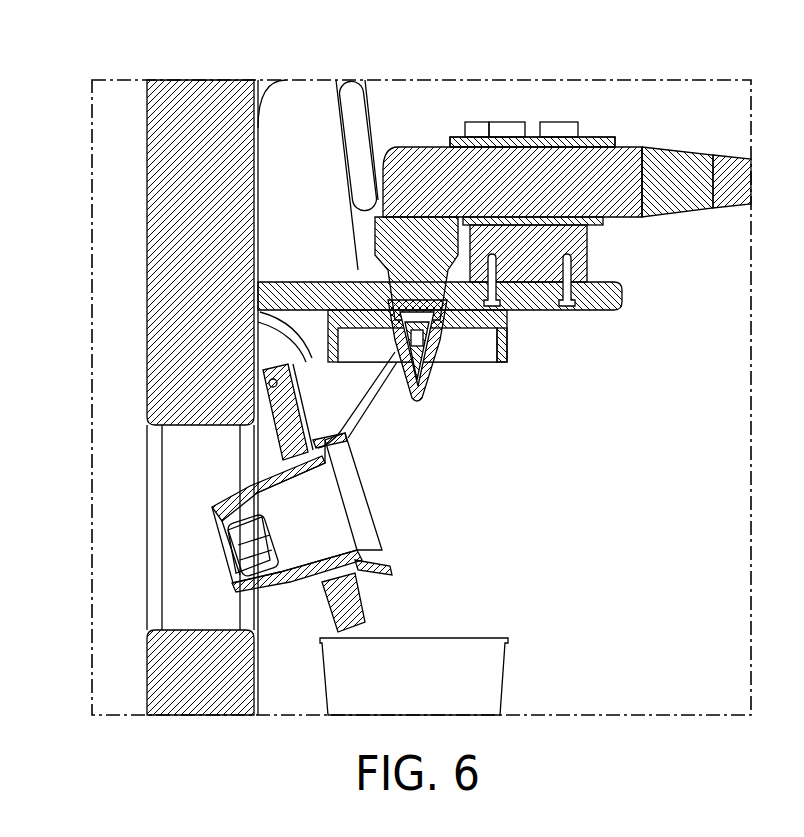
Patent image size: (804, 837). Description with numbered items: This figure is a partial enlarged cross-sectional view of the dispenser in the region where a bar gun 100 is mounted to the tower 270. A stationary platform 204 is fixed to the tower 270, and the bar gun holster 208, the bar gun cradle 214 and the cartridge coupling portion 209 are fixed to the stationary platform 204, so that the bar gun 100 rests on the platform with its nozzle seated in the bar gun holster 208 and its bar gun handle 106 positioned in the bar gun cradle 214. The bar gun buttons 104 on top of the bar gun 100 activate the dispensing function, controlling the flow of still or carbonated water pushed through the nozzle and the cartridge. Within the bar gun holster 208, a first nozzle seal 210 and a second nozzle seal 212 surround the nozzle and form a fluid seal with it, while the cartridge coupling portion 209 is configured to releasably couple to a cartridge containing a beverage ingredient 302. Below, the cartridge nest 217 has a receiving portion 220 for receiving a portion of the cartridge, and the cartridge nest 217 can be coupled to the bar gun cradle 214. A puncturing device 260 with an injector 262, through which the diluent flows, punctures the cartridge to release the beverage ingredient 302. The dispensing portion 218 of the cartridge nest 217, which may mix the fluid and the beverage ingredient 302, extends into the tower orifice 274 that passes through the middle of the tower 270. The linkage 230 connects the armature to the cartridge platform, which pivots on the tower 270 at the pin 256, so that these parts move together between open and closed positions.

The bar gun 100 is at (682, 126).
The bar gun buttons 104 is at (538, 118).
The bar gun handle 106 is at (629, 136).
The stationary platform 204 is at (622, 294).
The bar gun holster 208 is at (372, 272).
The cartridge coupling portion 209 is at (507, 345).
The first nozzle seal 210 is at (440, 300).
The second nozzle seal 212 is at (442, 312).
The bar gun cradle 214 is at (587, 248).
The cartridge nest 217 is at (378, 594).
The dispensing portion 218 is at (241, 583).
The receiving portion 220 is at (388, 569).
The linkage 230 is at (360, 110).
The pin 256 is at (270, 383).
The puncturing device 260 is at (436, 404).
The injector 262 is at (404, 391).
The tower 270 is at (166, 200).
The tower orifice 274 is at (186, 585).
The beverage ingredient 302 is at (333, 537).